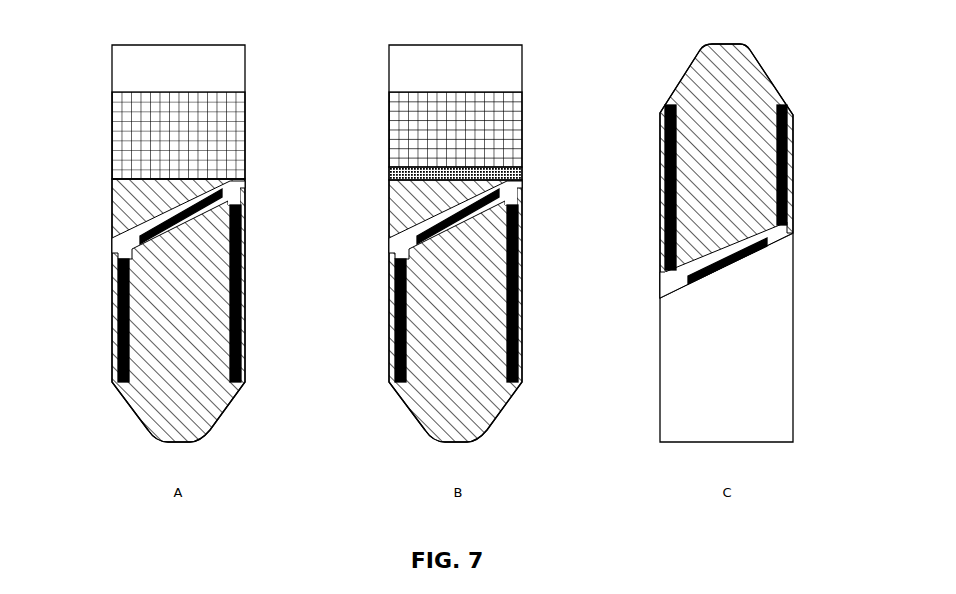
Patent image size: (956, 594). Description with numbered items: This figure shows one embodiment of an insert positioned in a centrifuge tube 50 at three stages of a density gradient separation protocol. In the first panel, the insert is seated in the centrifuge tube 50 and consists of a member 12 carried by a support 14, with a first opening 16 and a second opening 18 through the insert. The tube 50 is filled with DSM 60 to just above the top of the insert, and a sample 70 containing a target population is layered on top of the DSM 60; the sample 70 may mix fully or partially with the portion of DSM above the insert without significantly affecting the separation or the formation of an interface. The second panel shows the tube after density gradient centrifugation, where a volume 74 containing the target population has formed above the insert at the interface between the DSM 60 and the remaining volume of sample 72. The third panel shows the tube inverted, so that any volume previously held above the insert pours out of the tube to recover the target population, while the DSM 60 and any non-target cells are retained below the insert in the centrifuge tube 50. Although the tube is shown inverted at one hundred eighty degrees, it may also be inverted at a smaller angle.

The member 12 is at (163, 207).
The support 14 is at (122, 308).
The first opening 16 is at (124, 241).
The second opening 18 is at (240, 191).
The centrifuge tube 50 is at (110, 78).
The DSM 60 is at (160, 397).
The sample 70 is at (213, 140).
The remaining volume of sample 72 is at (492, 137).
The volume containing the target population 74 is at (520, 178).